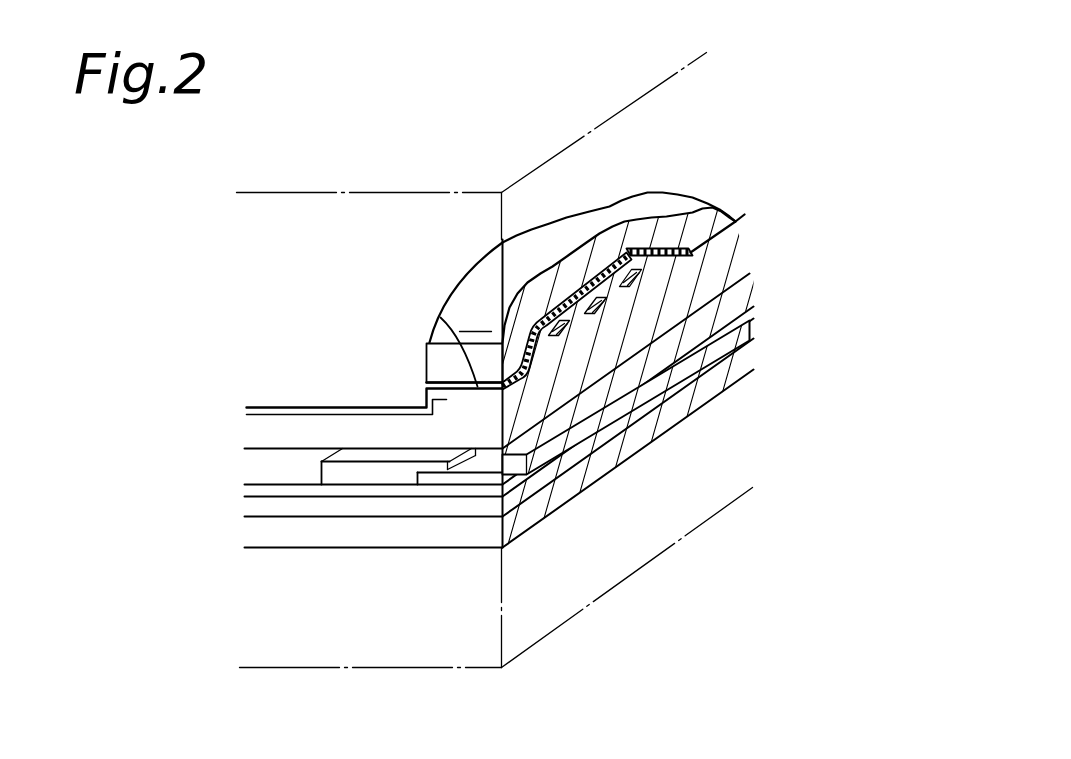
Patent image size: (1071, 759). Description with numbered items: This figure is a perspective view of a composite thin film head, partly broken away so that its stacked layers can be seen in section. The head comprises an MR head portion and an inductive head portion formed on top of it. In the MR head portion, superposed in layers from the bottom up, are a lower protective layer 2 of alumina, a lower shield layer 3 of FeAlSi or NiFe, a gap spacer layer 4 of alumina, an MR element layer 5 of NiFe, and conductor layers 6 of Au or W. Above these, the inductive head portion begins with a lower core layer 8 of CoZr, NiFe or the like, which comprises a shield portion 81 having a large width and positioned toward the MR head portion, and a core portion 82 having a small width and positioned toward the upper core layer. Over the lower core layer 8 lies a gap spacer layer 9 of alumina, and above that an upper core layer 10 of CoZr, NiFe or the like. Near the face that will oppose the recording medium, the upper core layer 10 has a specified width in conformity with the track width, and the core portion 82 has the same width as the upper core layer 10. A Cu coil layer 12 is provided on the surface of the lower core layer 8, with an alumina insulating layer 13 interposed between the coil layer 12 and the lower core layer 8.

The lower protective layer 2 is at (291, 538).
The lower shield layer 3 is at (347, 508).
The gap spacer layer 4 is at (391, 492).
The MR element layer 5 is at (490, 468).
The conductor layer 6 is at (410, 462).
The lower core layer 8 is at (497, 361).
The shield portion 81 is at (338, 440).
The core portion 82 is at (306, 349).
The gap spacer layer 9 is at (440, 330).
The upper core layer 10 is at (472, 287).
The coil layer 12 is at (597, 297).
The insulating layer 13 is at (662, 268).